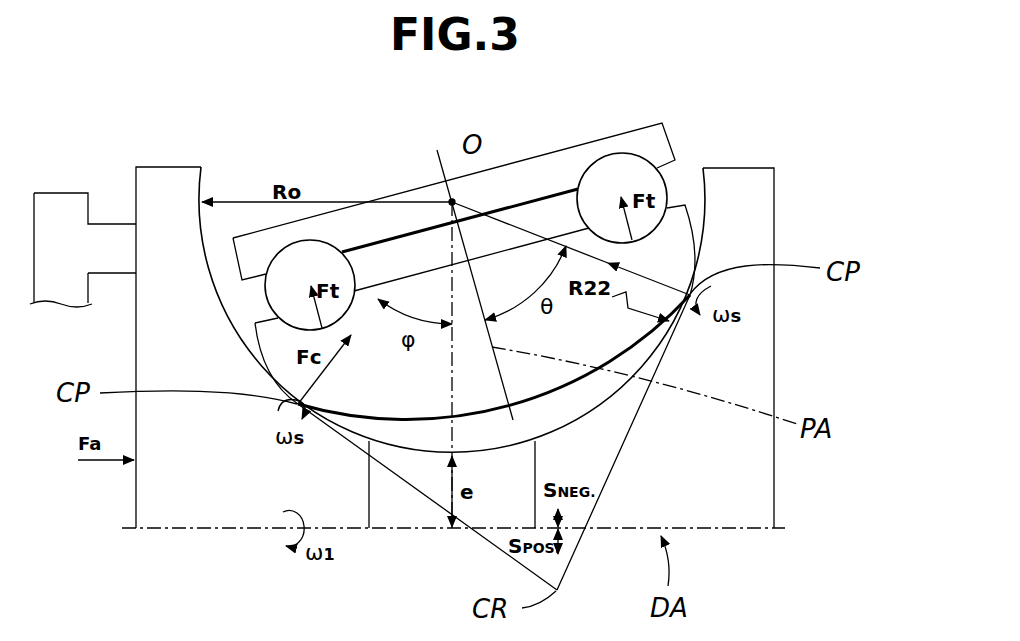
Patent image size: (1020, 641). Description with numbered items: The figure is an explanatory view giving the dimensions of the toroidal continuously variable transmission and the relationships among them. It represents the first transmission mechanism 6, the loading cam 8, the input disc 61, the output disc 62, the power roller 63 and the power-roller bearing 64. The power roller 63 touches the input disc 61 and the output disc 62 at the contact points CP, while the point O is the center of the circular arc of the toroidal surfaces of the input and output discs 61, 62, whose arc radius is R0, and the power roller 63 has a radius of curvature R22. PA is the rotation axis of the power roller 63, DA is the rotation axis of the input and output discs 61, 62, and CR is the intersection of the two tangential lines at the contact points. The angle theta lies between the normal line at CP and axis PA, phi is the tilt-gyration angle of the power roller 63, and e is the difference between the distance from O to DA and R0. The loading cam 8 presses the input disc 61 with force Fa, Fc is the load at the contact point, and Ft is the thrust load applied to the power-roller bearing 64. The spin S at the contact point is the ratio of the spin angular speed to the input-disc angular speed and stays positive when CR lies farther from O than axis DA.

The loading cam 8 is at (93, 176).
The first transmission mechanism 6 is at (560, 138).
The power-roller bearing 64 is at (637, 176).
The power roller 63 is at (453, 201).
The output disc 62 is at (752, 495).
The input disc 61 is at (177, 508).